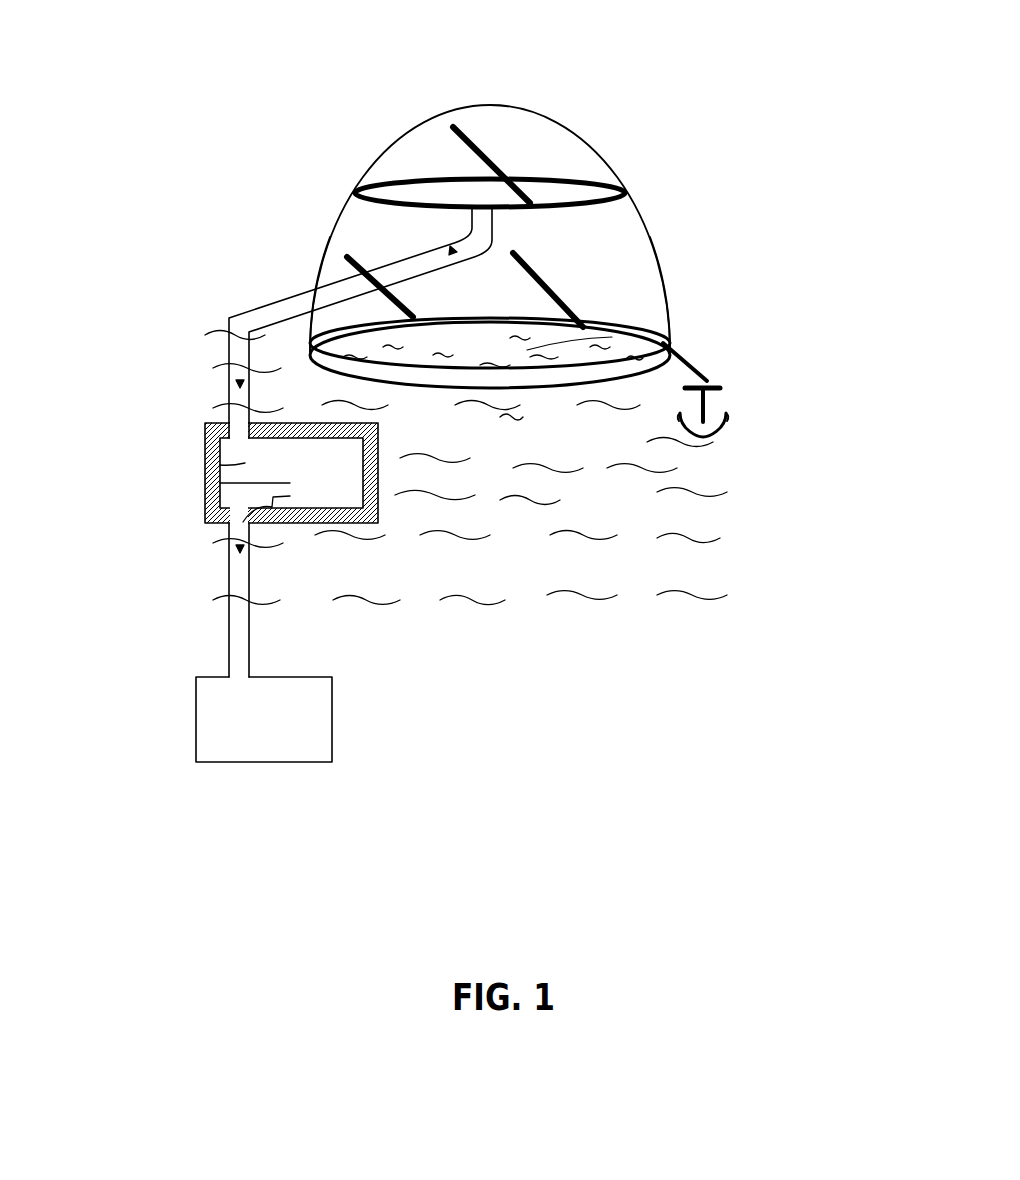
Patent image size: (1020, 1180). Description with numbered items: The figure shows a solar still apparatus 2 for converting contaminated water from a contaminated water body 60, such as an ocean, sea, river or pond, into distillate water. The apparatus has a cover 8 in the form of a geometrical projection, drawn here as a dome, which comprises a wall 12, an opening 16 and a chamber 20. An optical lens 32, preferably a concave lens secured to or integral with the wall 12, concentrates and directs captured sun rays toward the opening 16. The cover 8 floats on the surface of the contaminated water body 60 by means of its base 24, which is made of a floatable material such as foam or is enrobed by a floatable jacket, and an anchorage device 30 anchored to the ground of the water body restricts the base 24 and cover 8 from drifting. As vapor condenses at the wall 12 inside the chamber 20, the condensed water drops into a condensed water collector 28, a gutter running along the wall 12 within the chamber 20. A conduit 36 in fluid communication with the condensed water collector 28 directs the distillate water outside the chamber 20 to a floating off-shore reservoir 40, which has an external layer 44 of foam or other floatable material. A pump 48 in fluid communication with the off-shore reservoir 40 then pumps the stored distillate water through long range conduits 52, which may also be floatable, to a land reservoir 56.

The solar still apparatus 2 is at (290, 128).
The cover 8 is at (593, 68).
The wall 12 is at (573, 137).
The opening 16 is at (617, 330).
The chamber 20 is at (557, 277).
The base 24 is at (643, 320).
The condensed water collector 28 is at (576, 187).
The anchorage device 30 is at (718, 387).
The optical lens 32 is at (326, 248).
The conduit 36 is at (247, 320).
The off-shore reservoir 40 is at (207, 457).
The external layer 44 is at (226, 426).
The pump 48 is at (243, 502).
The long range conduits 52 is at (227, 638).
The land reservoir 56 is at (223, 728).
The contaminated water body 60 is at (577, 517).